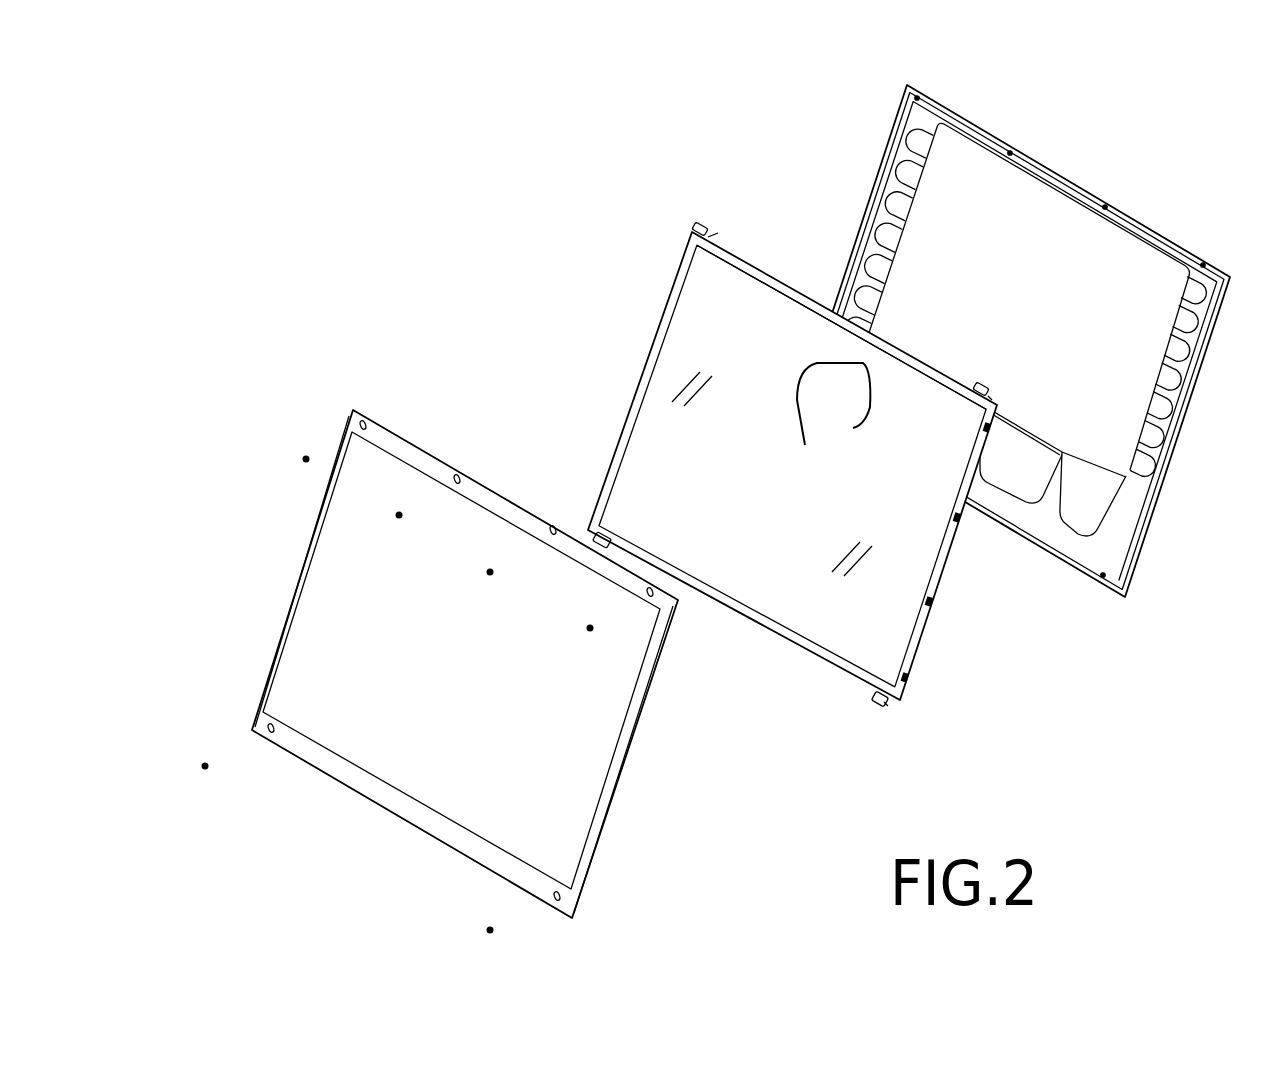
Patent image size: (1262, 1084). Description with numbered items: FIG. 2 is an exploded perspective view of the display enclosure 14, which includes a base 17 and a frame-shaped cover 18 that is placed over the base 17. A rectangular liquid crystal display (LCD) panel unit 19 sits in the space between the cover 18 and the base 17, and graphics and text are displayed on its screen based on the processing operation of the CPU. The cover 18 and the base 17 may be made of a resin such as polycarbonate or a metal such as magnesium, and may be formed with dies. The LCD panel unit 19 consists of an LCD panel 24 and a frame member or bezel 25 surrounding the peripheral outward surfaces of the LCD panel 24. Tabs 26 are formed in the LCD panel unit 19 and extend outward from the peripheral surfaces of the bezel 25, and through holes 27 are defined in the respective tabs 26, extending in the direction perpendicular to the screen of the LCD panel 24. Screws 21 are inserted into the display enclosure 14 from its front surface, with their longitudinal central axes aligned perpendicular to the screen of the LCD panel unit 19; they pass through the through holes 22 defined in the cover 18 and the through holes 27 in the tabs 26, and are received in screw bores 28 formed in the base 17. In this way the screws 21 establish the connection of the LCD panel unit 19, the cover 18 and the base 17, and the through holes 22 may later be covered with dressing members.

The display enclosure 14 is at (547, 255).
The base 17 is at (1152, 545).
The cover 18 is at (600, 853).
The liquid crystal display (LCD) panel unit 19 is at (920, 657).
The screws 21 is at (303, 460).
The through holes 22 is at (361, 422).
The LCD panel 24 is at (835, 645).
The bezel 25 is at (767, 270).
The tabs 26 is at (712, 238).
The through holes 27 is at (699, 226).
The screw bores 28 is at (915, 98).